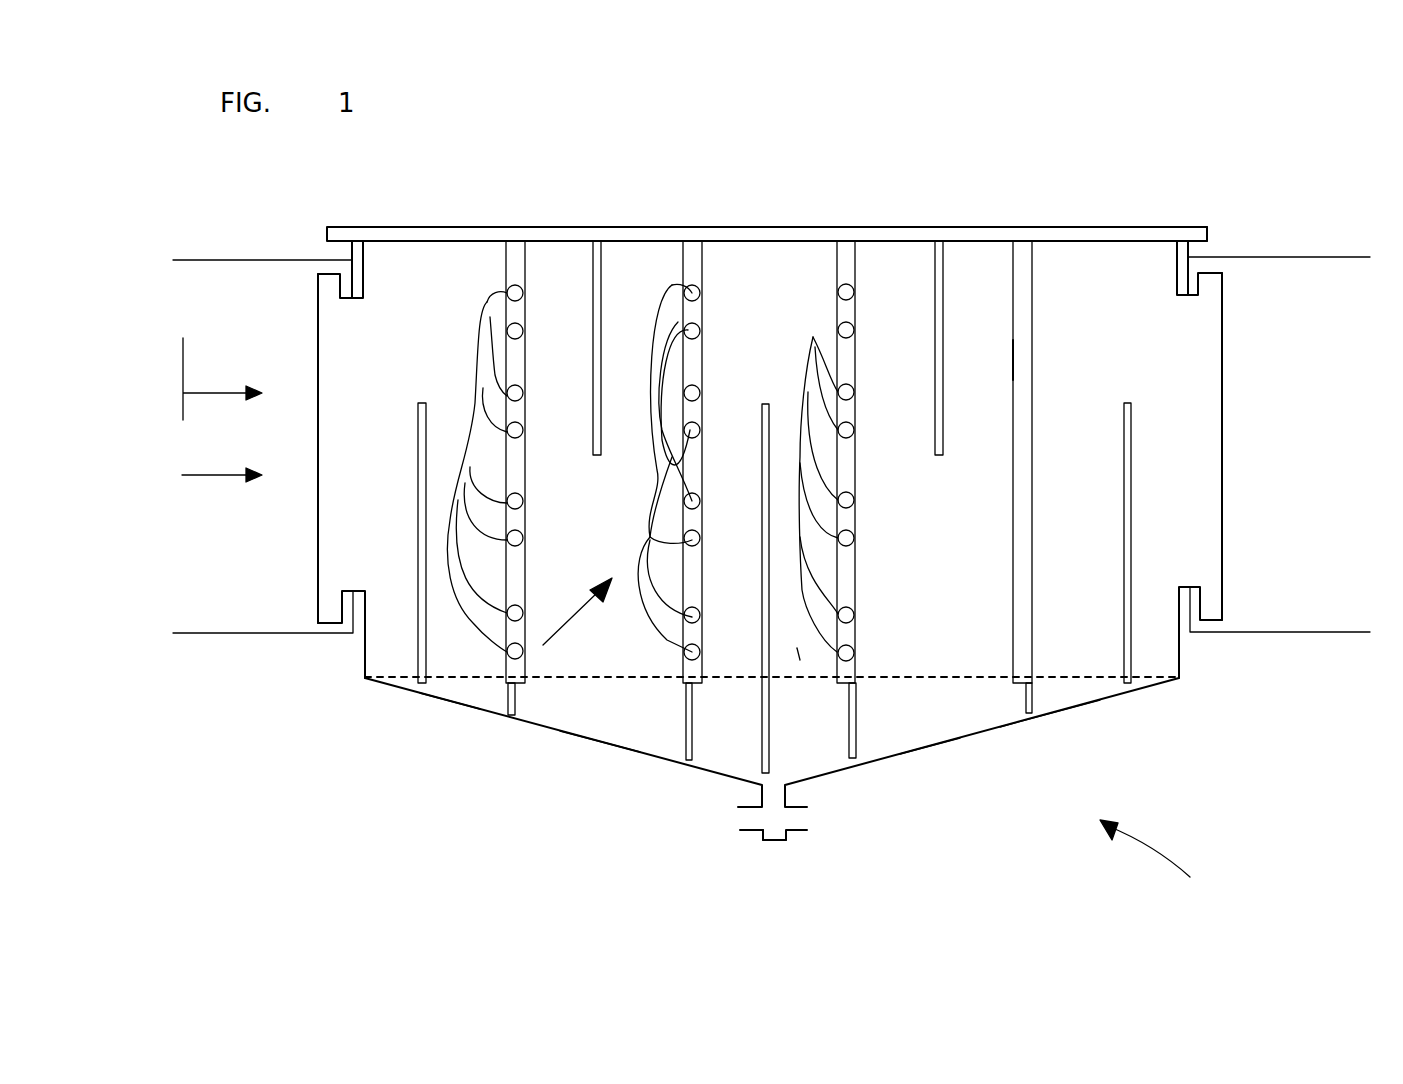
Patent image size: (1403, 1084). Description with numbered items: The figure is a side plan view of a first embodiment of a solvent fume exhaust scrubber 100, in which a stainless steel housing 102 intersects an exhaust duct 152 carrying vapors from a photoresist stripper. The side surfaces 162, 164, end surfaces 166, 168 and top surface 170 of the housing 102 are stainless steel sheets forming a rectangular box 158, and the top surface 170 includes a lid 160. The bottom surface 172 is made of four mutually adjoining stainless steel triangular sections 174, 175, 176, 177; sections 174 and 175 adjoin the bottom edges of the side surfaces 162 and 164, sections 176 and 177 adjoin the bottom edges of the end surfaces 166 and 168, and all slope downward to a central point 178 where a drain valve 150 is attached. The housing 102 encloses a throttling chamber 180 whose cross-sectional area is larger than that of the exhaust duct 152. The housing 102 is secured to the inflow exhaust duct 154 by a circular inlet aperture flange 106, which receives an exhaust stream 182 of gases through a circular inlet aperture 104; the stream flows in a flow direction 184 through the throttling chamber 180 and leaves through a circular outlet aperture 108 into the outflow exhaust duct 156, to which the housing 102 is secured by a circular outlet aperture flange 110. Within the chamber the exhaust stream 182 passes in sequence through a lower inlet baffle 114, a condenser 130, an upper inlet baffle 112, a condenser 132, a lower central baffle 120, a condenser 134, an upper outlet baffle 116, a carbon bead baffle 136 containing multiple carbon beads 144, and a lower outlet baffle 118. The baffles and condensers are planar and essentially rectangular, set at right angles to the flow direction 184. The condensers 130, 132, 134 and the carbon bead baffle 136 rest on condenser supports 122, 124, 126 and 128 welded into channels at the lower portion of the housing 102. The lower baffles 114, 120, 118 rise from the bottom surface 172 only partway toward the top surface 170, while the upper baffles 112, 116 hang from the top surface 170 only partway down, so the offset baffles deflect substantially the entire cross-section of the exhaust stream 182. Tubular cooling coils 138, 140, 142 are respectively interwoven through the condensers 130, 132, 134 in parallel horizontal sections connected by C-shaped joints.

The solvent fume exhaust scrubber 100 is at (1189, 848).
The housing 102 is at (965, 738).
The circular inlet aperture 104 is at (318, 503).
The circular inlet aperture flange 106 is at (318, 303).
The circular outlet aperture 108 is at (1222, 502).
The circular outlet aperture flange 110 is at (1278, 588).
The upper inlet baffle 112 is at (593, 290).
The lower inlet baffle 114 is at (423, 648).
The upper outlet baffle 116 is at (945, 282).
The lower outlet baffle 118 is at (1133, 642).
The lower central baffle 120 is at (760, 760).
The condenser support 122 is at (505, 705).
The condenser support 124 is at (680, 735).
The condenser support 126 is at (858, 722).
The condenser support 128 is at (1037, 697).
The condenser 130 is at (506, 277).
The condenser 132 is at (703, 272).
The condenser 134 is at (857, 270).
The carbon bead baffle 136 is at (1032, 272).
The tubular cooling coil 138 is at (467, 472).
The tubular cooling coil 140 is at (648, 468).
The tubular cooling coil 142 is at (838, 300).
The carbon beads 144 is at (1018, 360).
The drain valve 150 is at (800, 817).
The exhaust duct 152 is at (278, 258).
The inflow exhaust duct 154 is at (280, 632).
The outflow exhaust duct 156 is at (1273, 630).
The rectangular box 158 is at (797, 648).
The lid 160 is at (1232, 180).
The side surface 162 is at (640, 243).
The side surface 164 is at (655, 253).
The end surface 166 is at (318, 563).
The end surface 168 is at (1222, 372).
The top surface 170 is at (777, 226).
The bottom surface 172 is at (1085, 698).
The triangular section 174 is at (578, 713).
The triangular section 175 is at (613, 725).
The triangular section 176 is at (935, 738).
The triangular section 177 is at (468, 708).
The central point 178 is at (775, 843).
The throttling chamber 180 is at (576, 616).
The exhaust stream 182 is at (218, 461).
The flow direction 184 is at (222, 379).